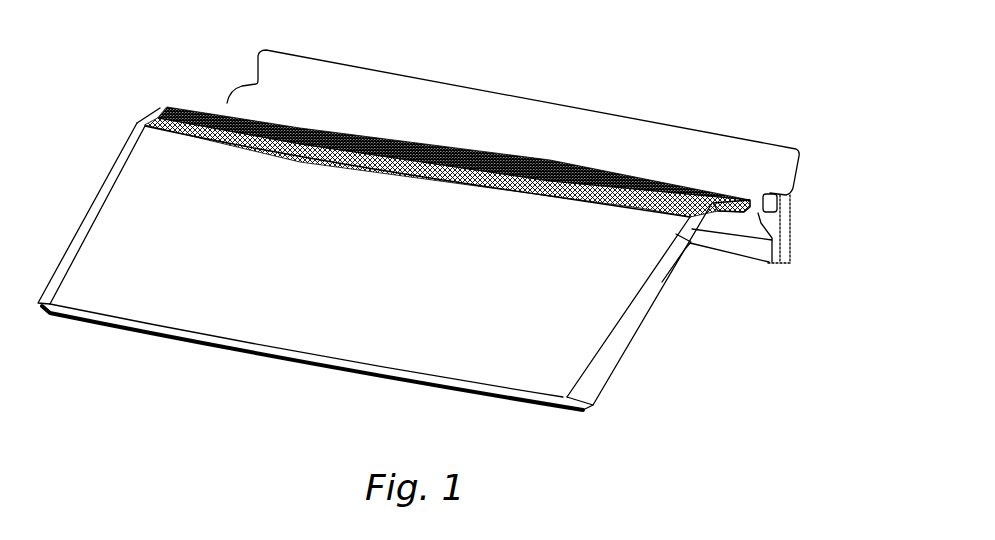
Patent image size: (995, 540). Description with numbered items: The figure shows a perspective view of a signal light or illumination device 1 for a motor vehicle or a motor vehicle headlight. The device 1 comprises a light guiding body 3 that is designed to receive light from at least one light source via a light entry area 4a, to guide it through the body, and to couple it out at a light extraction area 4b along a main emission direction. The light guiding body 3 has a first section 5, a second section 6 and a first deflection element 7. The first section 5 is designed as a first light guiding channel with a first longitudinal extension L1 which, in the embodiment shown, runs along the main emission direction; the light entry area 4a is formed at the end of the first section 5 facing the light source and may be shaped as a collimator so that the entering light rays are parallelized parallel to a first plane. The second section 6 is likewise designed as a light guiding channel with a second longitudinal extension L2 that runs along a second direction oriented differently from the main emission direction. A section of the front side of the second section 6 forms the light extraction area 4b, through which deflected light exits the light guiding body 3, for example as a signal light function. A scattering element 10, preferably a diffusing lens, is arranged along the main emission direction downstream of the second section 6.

The signal light or illumination device 1 is at (248, 62).
The light guiding body 3 is at (690, 262).
The light entry area 4a is at (777, 213).
The light extraction area 4b is at (493, 402).
The first section 5 is at (718, 210).
The second section 6 is at (615, 350).
The first deflection element 7 is at (158, 109).
The scattering element 10 is at (65, 312).
The first longitudinal extension L1 is at (220, 95).
The second longitudinal extension L2 is at (687, 280).